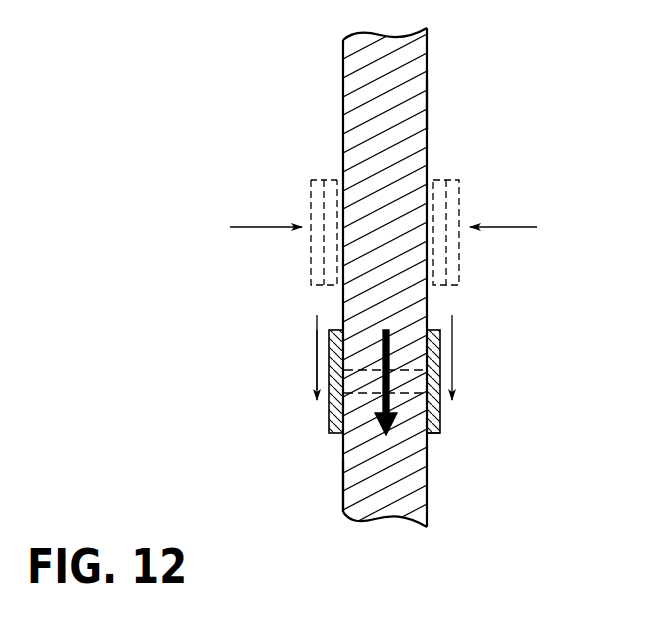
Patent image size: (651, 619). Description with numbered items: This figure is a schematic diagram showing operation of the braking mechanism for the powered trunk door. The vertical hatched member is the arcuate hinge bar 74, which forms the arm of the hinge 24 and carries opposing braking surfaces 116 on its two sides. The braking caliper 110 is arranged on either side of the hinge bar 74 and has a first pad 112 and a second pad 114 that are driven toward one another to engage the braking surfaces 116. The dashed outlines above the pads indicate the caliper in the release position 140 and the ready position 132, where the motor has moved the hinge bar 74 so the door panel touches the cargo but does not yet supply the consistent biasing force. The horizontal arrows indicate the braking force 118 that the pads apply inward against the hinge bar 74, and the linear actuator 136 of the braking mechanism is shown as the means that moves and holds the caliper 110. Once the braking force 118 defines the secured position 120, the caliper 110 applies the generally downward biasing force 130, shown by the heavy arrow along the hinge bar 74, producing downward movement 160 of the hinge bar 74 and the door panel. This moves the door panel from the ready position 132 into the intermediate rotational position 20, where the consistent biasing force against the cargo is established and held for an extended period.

The arcuate hinge bar 74 is at (400, 72).
The braking surfaces 116 is at (427, 102).
The hinge 24 is at (225, 160).
The ready position 132 is at (338, 180).
The release position 140 is at (308, 250).
The braking force 118 is at (503, 224).
The linear actuator 136 is at (300, 302).
The braking caliper 110 is at (258, 363).
The first pad 112 is at (330, 428).
The second pad 114 is at (440, 437).
The downward biasing force 130 is at (387, 342).
The downward movement 160 is at (453, 361).
The intermediate rotational position 20 is at (483, 434).
The secured position 120 is at (318, 480).